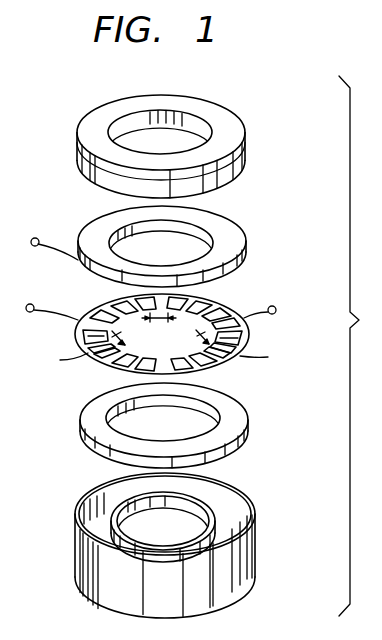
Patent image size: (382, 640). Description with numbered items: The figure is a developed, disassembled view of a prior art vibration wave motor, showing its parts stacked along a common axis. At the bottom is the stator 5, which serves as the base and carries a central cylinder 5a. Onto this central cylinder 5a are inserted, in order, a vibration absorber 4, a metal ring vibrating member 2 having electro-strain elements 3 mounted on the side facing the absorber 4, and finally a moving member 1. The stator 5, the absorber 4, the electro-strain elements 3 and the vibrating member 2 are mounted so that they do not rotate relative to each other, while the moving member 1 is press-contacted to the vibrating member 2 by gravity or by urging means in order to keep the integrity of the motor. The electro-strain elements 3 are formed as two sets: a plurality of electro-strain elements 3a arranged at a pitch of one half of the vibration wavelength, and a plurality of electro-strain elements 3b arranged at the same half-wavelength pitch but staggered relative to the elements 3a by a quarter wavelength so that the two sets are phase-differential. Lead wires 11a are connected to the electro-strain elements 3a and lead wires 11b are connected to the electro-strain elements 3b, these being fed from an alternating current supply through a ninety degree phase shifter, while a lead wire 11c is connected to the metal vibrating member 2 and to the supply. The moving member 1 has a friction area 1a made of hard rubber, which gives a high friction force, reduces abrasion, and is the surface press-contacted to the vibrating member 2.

The moving member 1 is at (188, 146).
The friction area 1a is at (246, 160).
The metal ring vibrating member 2 is at (245, 262).
The electro-strain elements 3 is at (162, 343).
The electro-strain elements 3a is at (247, 330).
The electro-strain elements 3b is at (77, 330).
The vibration absorber 4 is at (241, 422).
The stator 5 is at (189, 545).
The central cylinder 5a is at (217, 510).
The lead wires 11a is at (276, 307).
The lead wires 11b is at (48, 298).
The lead wire 11c is at (34, 238).